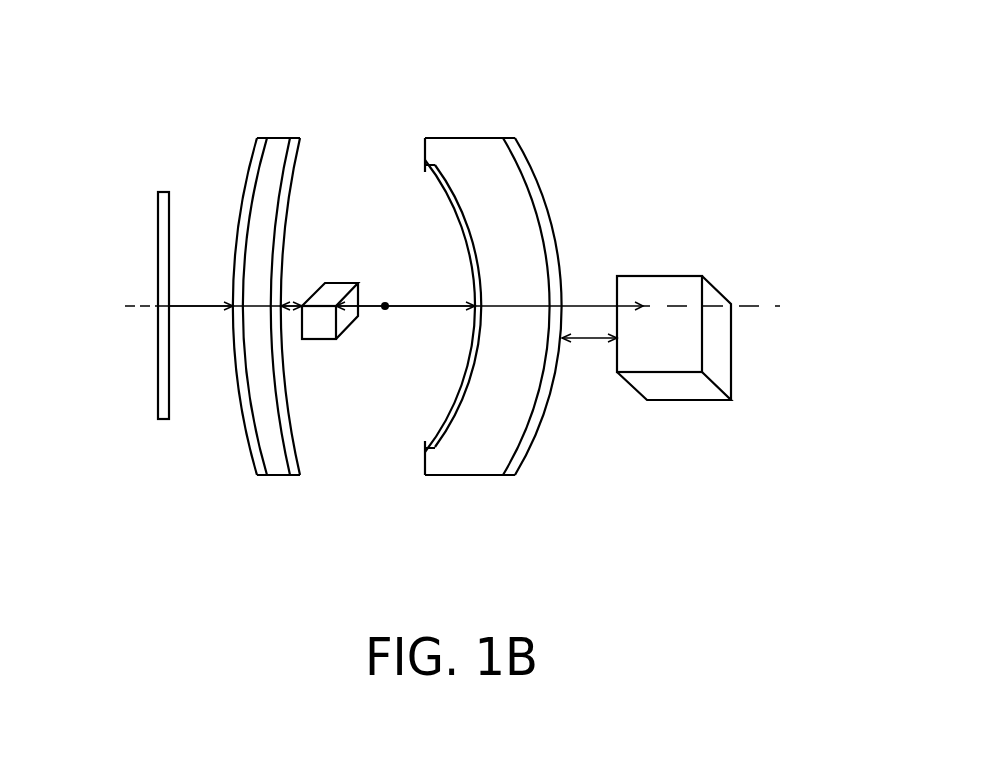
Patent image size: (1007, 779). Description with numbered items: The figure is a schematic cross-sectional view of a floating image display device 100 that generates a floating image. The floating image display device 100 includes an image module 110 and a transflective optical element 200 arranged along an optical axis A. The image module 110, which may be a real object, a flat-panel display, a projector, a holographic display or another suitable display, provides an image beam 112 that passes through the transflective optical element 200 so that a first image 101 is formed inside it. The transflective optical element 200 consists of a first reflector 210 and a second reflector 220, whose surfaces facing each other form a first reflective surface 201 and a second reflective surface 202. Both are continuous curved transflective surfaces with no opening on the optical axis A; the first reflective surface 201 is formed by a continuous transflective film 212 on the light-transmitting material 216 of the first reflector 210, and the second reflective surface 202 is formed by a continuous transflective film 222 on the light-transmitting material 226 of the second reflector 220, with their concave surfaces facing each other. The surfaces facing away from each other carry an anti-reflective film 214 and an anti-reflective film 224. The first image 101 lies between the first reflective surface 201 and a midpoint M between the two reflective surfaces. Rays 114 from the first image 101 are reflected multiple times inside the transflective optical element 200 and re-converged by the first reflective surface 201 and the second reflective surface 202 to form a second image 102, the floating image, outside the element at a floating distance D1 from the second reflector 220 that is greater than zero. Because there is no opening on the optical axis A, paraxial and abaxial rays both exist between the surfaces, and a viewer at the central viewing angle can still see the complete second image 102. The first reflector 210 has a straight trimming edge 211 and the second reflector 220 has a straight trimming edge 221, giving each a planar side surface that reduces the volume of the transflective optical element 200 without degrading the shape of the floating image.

The floating image display device 100 is at (765, 572).
The first image 101 is at (323, 340).
The second image 102 is at (662, 353).
The image module 110 is at (163, 419).
The image beam 112 is at (200, 304).
The rays 114 is at (415, 310).
The transflective optical element 200 is at (375, 100).
The first reflective surface 201 is at (299, 161).
The second reflective surface 202 is at (440, 183).
The first reflector 210 is at (273, 312).
The straight trimming edge 211 is at (282, 523).
The transflective film 212 is at (281, 228).
The anti-reflective film 214 is at (239, 333).
The light-transmitting material 216 is at (262, 187).
The second reflector 220 is at (476, 297).
The straight trimming edge 221 is at (470, 88).
The transflective film 222 is at (462, 410).
The anti-reflective film 224 is at (532, 427).
The light-transmitting material 226 is at (475, 460).
The optical axis A is at (442, 300).
The midpoint M is at (385, 303).
The floating distance D1 is at (589, 356).